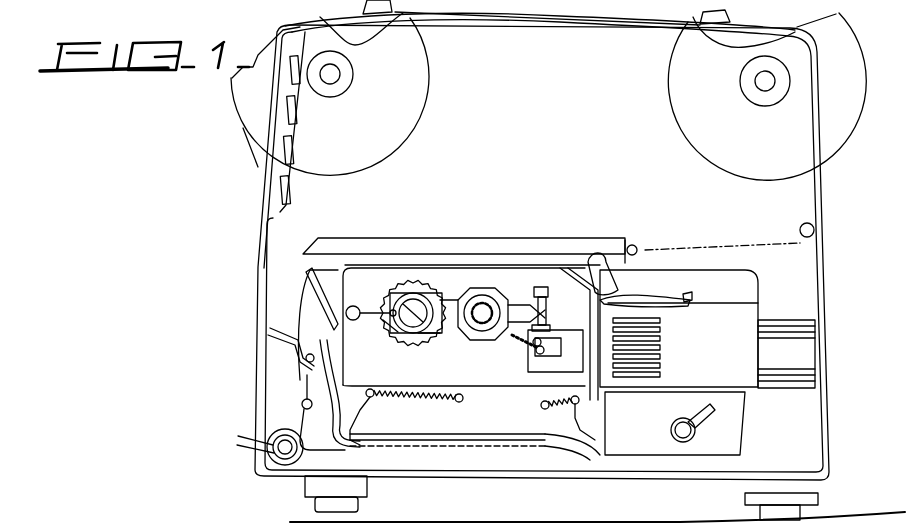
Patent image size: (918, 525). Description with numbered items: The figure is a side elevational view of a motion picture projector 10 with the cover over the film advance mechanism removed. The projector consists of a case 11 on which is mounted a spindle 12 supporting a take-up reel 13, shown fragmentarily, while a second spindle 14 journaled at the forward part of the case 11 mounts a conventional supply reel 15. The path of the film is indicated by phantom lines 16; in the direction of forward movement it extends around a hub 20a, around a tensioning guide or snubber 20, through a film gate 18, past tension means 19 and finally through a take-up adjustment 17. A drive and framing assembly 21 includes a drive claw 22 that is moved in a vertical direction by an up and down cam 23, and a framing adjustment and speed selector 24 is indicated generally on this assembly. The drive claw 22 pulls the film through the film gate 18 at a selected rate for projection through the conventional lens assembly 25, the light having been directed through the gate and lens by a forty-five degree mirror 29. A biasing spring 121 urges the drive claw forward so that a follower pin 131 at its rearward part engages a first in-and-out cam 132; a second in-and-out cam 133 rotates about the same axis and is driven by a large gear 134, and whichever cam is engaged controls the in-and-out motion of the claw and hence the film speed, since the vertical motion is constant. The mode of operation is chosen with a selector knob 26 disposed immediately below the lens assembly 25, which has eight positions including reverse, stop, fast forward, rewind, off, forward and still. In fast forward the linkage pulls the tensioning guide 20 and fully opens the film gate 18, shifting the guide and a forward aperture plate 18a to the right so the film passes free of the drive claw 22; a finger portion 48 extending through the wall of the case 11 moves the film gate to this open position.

The motion picture projector 10 is at (195, 182).
The case 11 is at (257, 287).
The spindle 12 is at (334, 74).
The take-up reel 13 is at (345, 36).
The second spindle 14 is at (760, 82).
The supply reel 15 is at (675, 70).
The film path 16 is at (290, 203).
The take-up adjustment 17 is at (317, 275).
The film gate 18 is at (612, 302).
The forward aperture plate 18a is at (607, 392).
The tension means 19 is at (362, 432).
The tensioning guide 20 is at (620, 286).
The hub 20a is at (803, 224).
The drive and framing assembly 21 is at (537, 238).
The drive claw 22 is at (470, 348).
The up and down cam 23 is at (484, 300).
The framing adjustment and speed selector 24 is at (413, 287).
The lens assembly 25 is at (800, 357).
The selector knob 26 is at (690, 432).
The mirror 29 is at (563, 334).
The finger portion 48 is at (664, 306).
The biasing spring 121 is at (532, 359).
The follower pin 131 is at (386, 330).
The first in-and-out cam 132 is at (418, 336).
The second in-and-out cam 133 is at (472, 296).
The large gear 134 is at (392, 296).